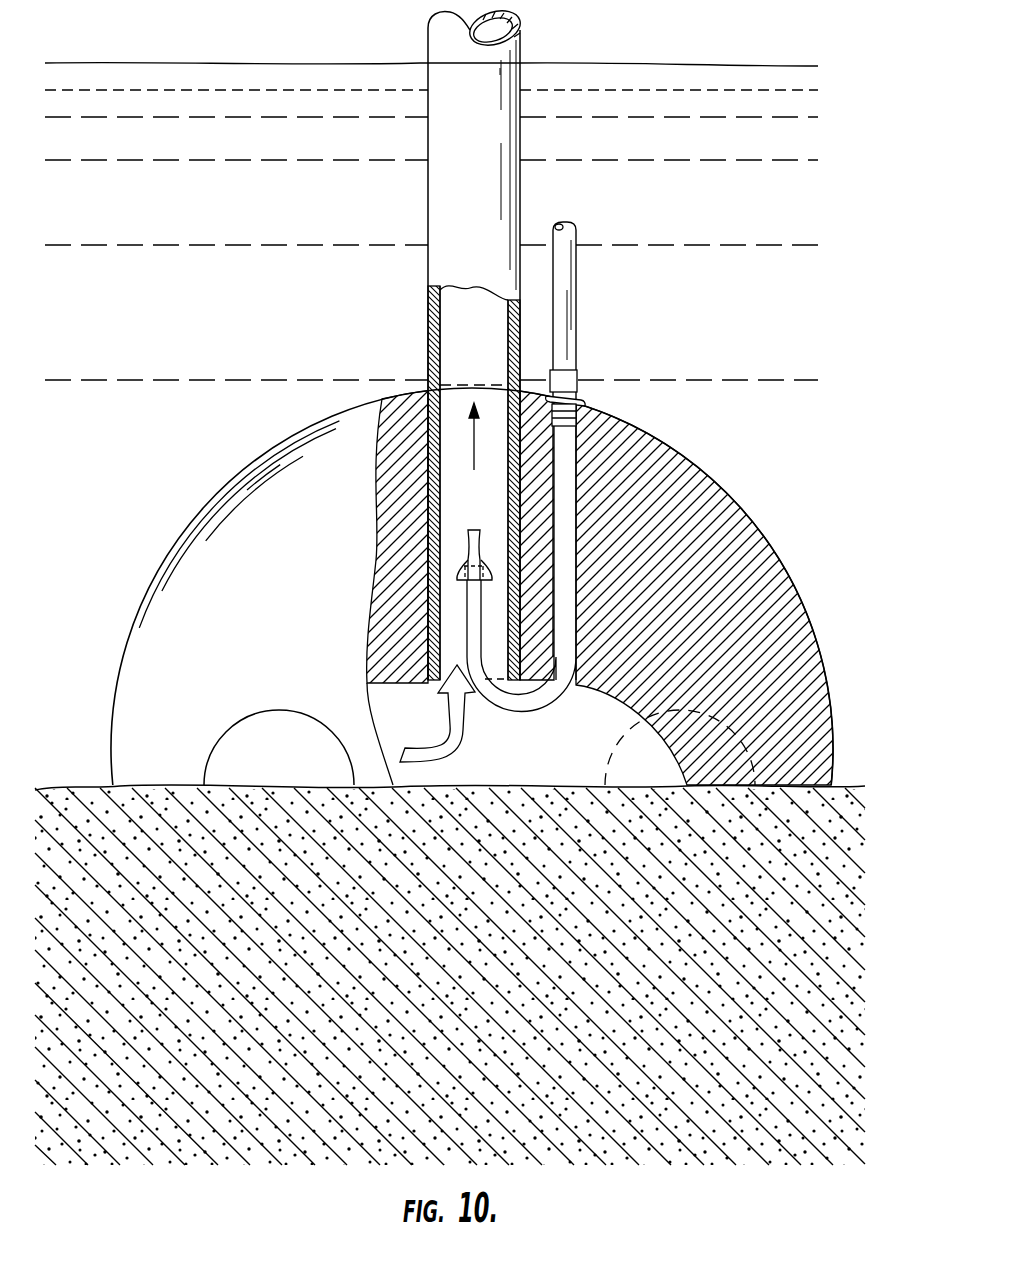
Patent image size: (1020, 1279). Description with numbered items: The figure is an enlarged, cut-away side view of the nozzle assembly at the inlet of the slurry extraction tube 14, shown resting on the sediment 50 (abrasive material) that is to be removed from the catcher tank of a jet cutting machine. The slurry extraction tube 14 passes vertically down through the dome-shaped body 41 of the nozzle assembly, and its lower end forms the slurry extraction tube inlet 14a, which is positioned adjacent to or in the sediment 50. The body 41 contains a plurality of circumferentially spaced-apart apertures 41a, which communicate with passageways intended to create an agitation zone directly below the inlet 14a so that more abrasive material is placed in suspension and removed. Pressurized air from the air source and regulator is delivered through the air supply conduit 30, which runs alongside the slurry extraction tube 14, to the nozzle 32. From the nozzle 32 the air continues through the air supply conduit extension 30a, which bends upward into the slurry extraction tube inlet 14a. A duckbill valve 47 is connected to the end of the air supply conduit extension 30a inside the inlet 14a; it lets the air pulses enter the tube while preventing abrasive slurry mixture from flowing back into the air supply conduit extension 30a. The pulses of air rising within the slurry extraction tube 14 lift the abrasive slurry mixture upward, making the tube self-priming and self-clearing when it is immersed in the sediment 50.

The slurry extraction tube 14 is at (487, 105).
The slurry extraction tube inlet 14a is at (467, 702).
The air supply conduit 30 is at (576, 334).
The air supply conduit extension 30a is at (548, 700).
The nozzle 32 is at (579, 382).
The body of the nozzle assembly 41 is at (740, 504).
The apertures 41a is at (290, 733).
The duckbill valve 47 is at (466, 558).
The sediment 50 is at (84, 784).